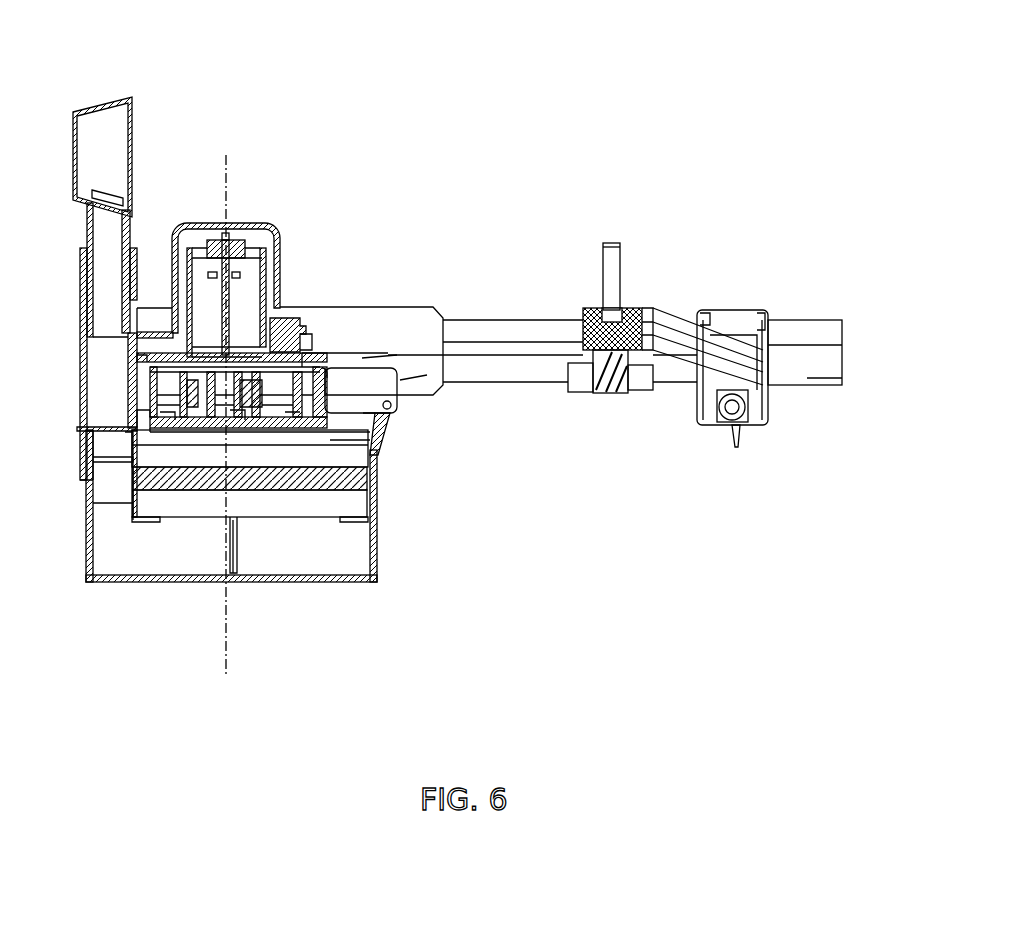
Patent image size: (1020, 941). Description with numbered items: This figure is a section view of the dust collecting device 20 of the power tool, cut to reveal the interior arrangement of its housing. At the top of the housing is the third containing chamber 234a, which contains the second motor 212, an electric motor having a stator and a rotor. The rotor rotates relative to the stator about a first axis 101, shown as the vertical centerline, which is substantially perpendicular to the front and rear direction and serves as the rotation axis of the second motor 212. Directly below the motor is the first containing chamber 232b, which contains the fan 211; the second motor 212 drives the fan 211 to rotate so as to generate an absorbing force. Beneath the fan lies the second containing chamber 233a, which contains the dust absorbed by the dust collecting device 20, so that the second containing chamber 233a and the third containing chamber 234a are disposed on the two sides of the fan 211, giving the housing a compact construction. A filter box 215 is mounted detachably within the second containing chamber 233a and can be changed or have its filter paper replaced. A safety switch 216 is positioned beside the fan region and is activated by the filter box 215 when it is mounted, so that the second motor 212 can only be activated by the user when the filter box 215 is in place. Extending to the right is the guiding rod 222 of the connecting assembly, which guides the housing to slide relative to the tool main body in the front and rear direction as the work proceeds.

The dust collecting device 20 is at (405, 115).
The third containing chamber 234a is at (260, 233).
The second motor 212 is at (263, 272).
The first containing chamber 232b is at (137, 368).
The fan 211 is at (148, 410).
The safety switch 216 is at (397, 405).
The filter box 215 is at (353, 482).
The second containing chamber 233a is at (348, 555).
The first axis 101 is at (226, 630).
The guiding rod 222 is at (797, 367).